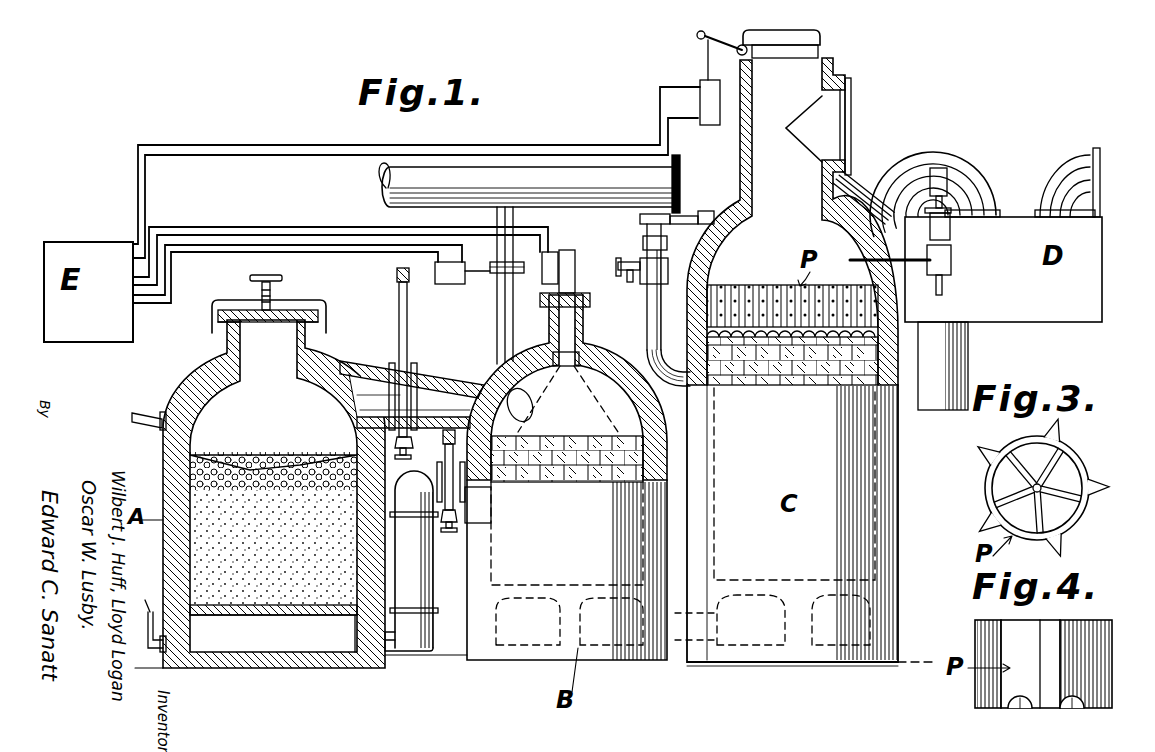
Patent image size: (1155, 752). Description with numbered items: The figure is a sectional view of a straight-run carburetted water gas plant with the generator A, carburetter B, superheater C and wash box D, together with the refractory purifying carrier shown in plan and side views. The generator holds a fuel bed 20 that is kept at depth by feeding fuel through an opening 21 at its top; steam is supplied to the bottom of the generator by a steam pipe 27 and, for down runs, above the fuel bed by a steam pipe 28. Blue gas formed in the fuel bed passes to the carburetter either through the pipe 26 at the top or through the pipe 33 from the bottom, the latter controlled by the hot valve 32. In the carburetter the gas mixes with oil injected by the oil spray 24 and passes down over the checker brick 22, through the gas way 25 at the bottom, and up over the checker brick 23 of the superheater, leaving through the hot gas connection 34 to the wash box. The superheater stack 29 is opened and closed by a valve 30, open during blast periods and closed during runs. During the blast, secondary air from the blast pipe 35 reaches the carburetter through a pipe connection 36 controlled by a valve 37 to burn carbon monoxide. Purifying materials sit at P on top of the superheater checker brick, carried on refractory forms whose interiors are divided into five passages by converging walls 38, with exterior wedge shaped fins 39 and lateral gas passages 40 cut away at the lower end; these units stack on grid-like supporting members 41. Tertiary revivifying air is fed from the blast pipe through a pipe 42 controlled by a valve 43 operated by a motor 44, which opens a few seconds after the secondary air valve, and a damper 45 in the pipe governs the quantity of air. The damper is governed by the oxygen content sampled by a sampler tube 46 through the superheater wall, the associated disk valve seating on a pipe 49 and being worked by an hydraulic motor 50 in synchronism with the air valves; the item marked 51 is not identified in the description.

In FIG. 1, the fuel bed 20 is at (190, 470).
In FIG. 1, the opening 21 is at (278, 330).
In FIG. 1, the checker brick 22 is at (548, 445).
In FIG. 1, the checker brick 23 is at (862, 358).
In FIG. 1, the oil spray 24 is at (570, 360).
In FIG. 1, the gas way 25 is at (660, 640).
In FIG. 1, the pipe 26 is at (372, 382).
In FIG. 1, the steam pipe 27 is at (156, 612).
In FIG. 1, the steam pipe 28 is at (160, 411).
In FIG. 1, the stack 29 is at (810, 102).
In FIG. 1, the valve 30 is at (820, 52).
In FIG. 1, the hot valve 32 is at (456, 494).
In FIG. 1, the pipe 33 is at (418, 653).
In FIG. 1, the hot gas connection 34 is at (906, 162).
In FIG. 1, the blast pipe 35 is at (508, 172).
In FIG. 1, the pipe connection 36 is at (504, 343).
In FIG. 1, the valve 37 is at (494, 274).
In FIG. 3, the walls 38 is at (1048, 516).
In FIG. 3, the wedge shaped fins 39 is at (990, 448).
In FIG. 4, the wedge shaped fins 39 is at (1058, 640).
In FIG. 4, the lateral gas passages 40 is at (1076, 704).
In FIG. 1, the grid-like supporting members 41 is at (848, 340).
In FIG. 1, the pipe 42 is at (645, 246).
In FIG. 1, the valve 43 is at (640, 222).
In FIG. 1, the motor 44 is at (698, 226).
In FIG. 1, the damper 45 is at (640, 270).
In FIG. 1, the sampler tube 46 is at (900, 262).
In FIG. 1, the pipe 49 is at (946, 280).
In FIG. 1, the hydraulic motor 50 is at (948, 172).
In FIG. 1, the valve 51 is at (410, 385).